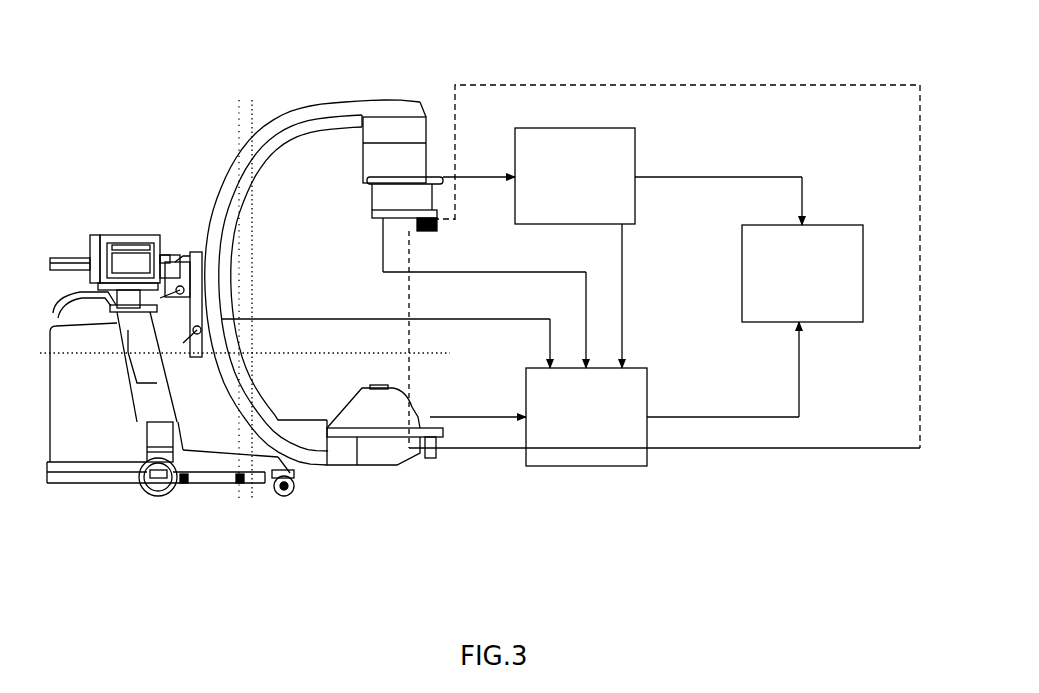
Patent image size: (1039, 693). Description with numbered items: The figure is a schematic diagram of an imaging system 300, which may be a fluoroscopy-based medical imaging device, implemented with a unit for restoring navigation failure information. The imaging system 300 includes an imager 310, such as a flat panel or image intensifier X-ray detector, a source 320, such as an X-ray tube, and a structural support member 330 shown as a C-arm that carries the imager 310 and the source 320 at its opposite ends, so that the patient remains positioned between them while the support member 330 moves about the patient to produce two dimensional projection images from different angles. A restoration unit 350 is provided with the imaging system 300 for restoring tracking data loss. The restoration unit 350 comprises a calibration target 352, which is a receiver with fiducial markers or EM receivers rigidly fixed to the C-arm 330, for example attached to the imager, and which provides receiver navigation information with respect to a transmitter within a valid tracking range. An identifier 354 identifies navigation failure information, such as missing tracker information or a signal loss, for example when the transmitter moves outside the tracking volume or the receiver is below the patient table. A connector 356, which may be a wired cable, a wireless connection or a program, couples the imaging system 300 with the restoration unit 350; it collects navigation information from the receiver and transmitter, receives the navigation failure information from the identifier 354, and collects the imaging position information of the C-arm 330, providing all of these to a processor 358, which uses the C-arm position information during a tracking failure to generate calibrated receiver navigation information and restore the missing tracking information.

The imaging system 300 is at (128, 139).
The imager 310 is at (391, 134).
The source 320 is at (384, 409).
The structural support member 330 is at (271, 152).
The restoration unit 350 is at (664, 275).
The calibration target 352 is at (432, 204).
The identifier 354 is at (658, 248).
The connector 356 is at (662, 394).
The processor 358 is at (802, 273).